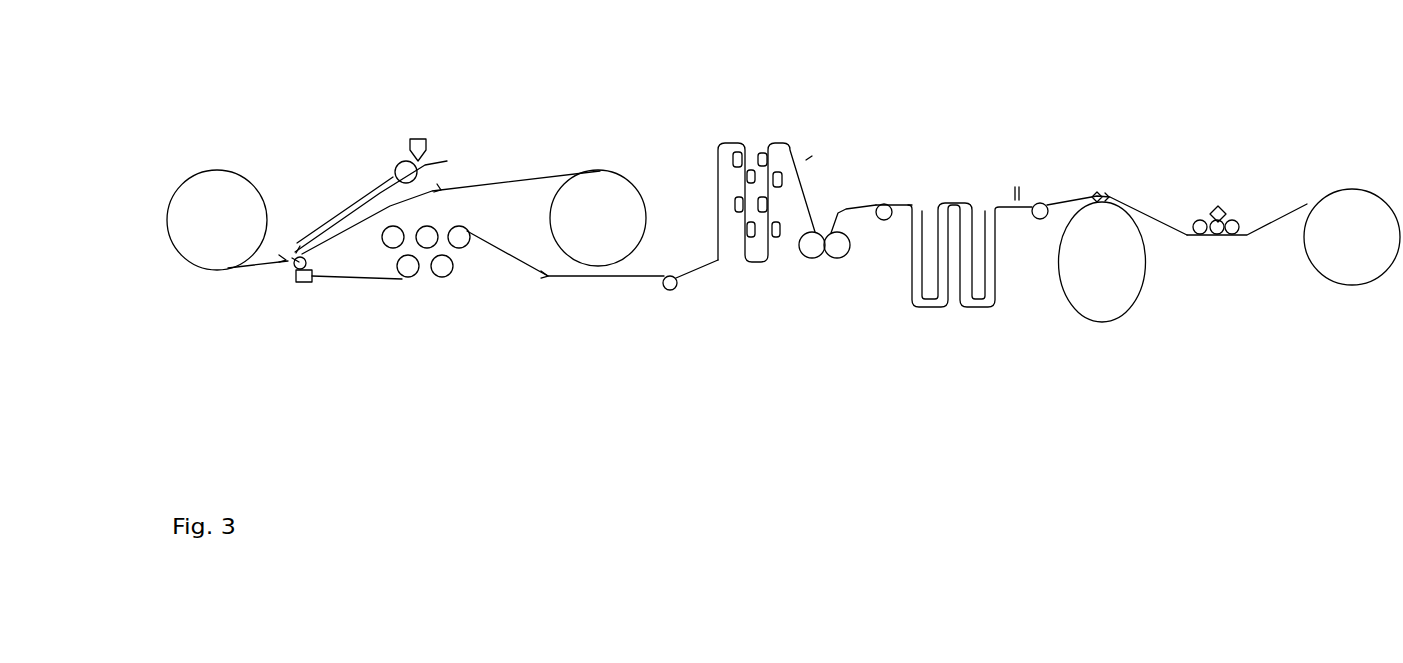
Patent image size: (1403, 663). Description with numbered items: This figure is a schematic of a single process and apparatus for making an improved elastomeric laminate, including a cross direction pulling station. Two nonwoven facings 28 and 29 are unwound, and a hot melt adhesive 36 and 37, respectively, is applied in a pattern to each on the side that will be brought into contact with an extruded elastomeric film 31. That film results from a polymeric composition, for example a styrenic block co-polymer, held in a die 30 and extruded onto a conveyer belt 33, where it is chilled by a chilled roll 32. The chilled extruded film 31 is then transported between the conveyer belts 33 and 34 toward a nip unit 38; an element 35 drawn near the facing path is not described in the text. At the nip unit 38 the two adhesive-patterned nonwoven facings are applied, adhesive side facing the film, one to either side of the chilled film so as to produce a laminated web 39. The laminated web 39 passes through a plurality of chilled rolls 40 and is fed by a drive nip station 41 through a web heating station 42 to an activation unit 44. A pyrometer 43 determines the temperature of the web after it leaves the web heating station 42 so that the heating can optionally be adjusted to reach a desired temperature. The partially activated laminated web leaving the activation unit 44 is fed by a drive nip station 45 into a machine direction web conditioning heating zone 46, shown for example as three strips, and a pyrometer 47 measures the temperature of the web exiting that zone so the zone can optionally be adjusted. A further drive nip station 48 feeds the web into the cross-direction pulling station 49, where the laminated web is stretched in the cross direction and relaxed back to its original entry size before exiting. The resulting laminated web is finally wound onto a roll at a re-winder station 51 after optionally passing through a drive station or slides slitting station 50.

The nonwoven facing 28 is at (243, 176).
The nonwoven facing 29 is at (608, 171).
The die 30 is at (430, 137).
The extruded elastomeric film 31 is at (418, 160).
The chilled roll 32 is at (403, 158).
The conveyer belt 33 is at (388, 167).
The conveyer belt 34 is at (451, 201).
The web guide 35 is at (296, 251).
The hot melt adhesive 36 is at (285, 262).
The hot melt adhesive 37 is at (312, 268).
The nip unit 38 is at (293, 265).
The laminated web 39 is at (300, 272).
The chilled rolls 40 is at (433, 272).
The drive nip station 41 is at (664, 288).
The web heating station 42 is at (736, 210).
The pyrometer 43 is at (810, 161).
The activation unit 44 is at (807, 262).
The drive nip station 45 is at (884, 200).
The machine direction web conditioning heating zone 46 is at (963, 303).
The pyrometer 47 is at (1013, 183).
The drive nip station 48 is at (1038, 195).
The cross-direction pulling station 49 is at (1077, 310).
The slides slitting station 50 is at (1212, 208).
The re-winder station 51 is at (1357, 188).